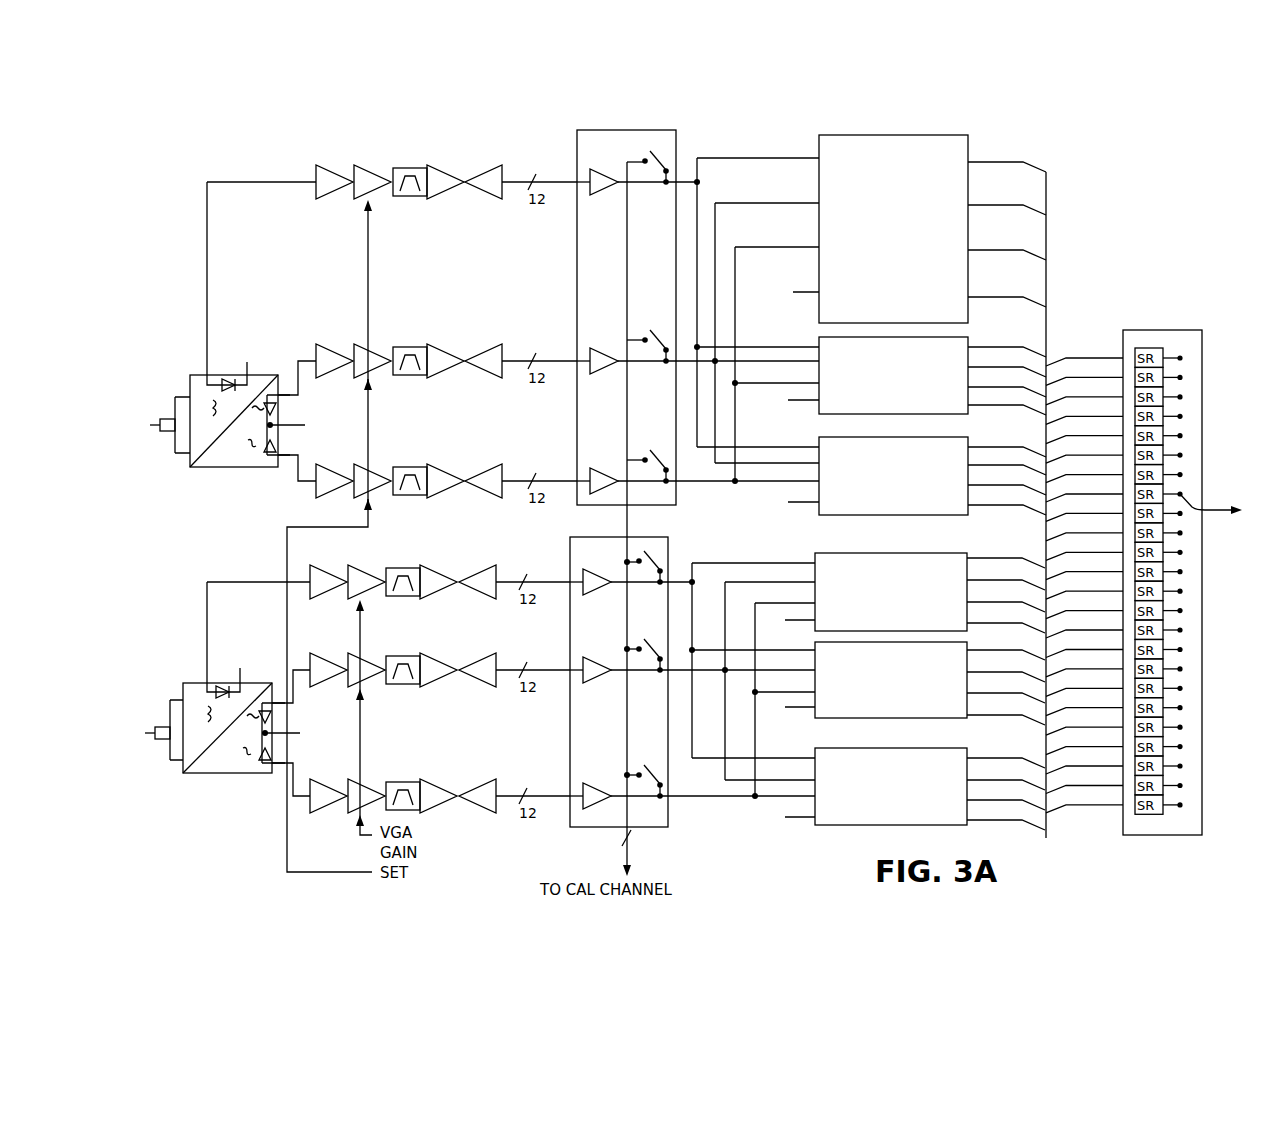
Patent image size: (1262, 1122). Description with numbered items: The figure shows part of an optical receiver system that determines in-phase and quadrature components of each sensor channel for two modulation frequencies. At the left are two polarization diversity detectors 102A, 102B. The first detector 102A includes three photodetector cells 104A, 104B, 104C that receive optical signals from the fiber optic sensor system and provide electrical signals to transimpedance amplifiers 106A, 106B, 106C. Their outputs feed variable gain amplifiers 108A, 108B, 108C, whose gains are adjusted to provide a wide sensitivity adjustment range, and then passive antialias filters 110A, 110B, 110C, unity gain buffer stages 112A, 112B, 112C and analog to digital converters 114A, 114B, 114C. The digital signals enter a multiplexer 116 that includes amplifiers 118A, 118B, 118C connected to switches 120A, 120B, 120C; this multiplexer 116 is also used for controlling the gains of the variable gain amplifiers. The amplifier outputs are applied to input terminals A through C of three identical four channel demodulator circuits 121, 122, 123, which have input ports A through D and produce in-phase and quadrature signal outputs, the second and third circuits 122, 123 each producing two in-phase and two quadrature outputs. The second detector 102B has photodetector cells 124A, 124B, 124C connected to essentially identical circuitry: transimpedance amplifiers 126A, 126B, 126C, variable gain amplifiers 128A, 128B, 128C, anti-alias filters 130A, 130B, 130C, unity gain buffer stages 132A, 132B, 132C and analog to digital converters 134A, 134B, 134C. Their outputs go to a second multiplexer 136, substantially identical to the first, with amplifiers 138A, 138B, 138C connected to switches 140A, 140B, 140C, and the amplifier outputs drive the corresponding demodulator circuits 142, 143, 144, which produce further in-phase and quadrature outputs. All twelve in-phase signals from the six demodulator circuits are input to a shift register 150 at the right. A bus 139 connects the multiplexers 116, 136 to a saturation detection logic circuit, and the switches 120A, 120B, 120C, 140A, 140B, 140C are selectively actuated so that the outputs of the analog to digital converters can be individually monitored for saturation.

The polarization diversity detector 102A is at (198, 470).
The polarization diversity detector 102B is at (195, 775).
The photodetector cell 104A is at (234, 362).
The photodetector cell 104B is at (292, 405).
The photodetector cell 104C is at (258, 459).
The transimpedance amplifier 106A is at (317, 172).
The transimpedance amplifier 106B is at (316, 350).
The transimpedance amplifier 106C is at (315, 488).
The variable gain amplifier 108A is at (352, 192).
The variable gain amplifier 108B is at (353, 352).
The variable gain amplifier 108C is at (353, 468).
The passive antialias filter 110A is at (392, 168).
The passive antialias filter 110B is at (395, 347).
The passive antialias filter 110C is at (396, 467).
The unity gain buffer stage 112A is at (452, 170).
The unity gain buffer stage 112B is at (452, 352).
The unity gain buffer stage 112C is at (452, 470).
The analog to digital converter 114A is at (481, 193).
The analog to digital converter 114B is at (482, 377).
The analog to digital converter 114C is at (481, 495).
The multiplexer 116 is at (577, 143).
The amplifier 118A is at (600, 198).
The amplifier 118B is at (600, 375).
The amplifier 118C is at (604, 467).
The switch 120A is at (639, 142).
The switch 120B is at (641, 320).
The switch 120C is at (641, 438).
The four channel demodulator circuit 121 is at (819, 140).
The four channel demodulator circuit 122 is at (819, 343).
The four channel demodulator circuit 123 is at (819, 442).
The photodetector cell 124A is at (230, 670).
The photodetector cell 124B is at (288, 716).
The photodetector cell 124C is at (254, 768).
The transimpedance amplifier 126A is at (317, 568).
The transimpedance amplifier 126B is at (323, 658).
The transimpedance amplifier 126C is at (325, 768).
The variable gain amplifier 128A is at (364, 568).
The variable gain amplifier 128B is at (370, 687).
The variable gain amplifier 128C is at (343, 808).
The anti-alias filter 130A is at (390, 598).
The anti-alias filter 130B is at (393, 656).
The anti-alias filter 130C is at (388, 781).
The unity gain buffer stage 132A is at (447, 558).
The unity gain buffer stage 132B is at (423, 687).
The unity gain buffer stage 132C is at (440, 770).
The analog to digital converter 134A is at (480, 597).
The analog to digital converter 134B is at (483, 687).
The analog to digital converter 134C is at (480, 808).
The multiplexer 136 is at (668, 556).
The amplifier 138A is at (605, 610).
The amplifier 138B is at (605, 700).
The amplifier 138C is at (601, 783).
The bus 139 is at (612, 838).
The switch 140A is at (637, 548).
The switch 140B is at (637, 635).
The switch 140C is at (637, 760).
The demodulator circuit 142 is at (815, 556).
The demodulator circuit 143 is at (815, 708).
The demodulator circuit 144 is at (815, 822).
The shift register 150 is at (1178, 330).